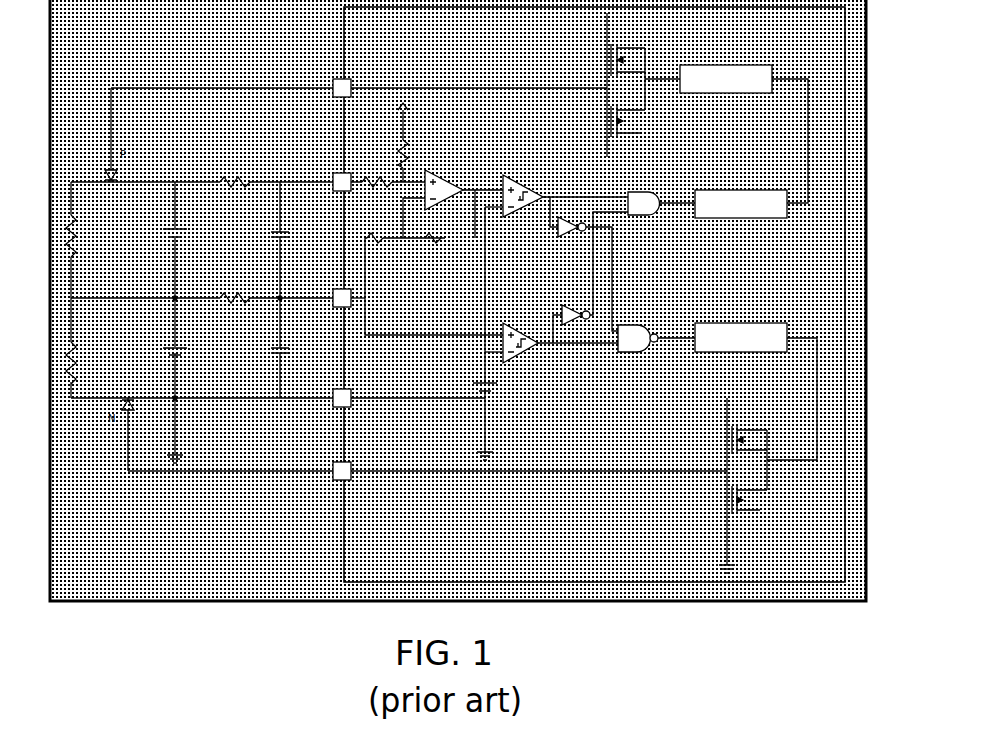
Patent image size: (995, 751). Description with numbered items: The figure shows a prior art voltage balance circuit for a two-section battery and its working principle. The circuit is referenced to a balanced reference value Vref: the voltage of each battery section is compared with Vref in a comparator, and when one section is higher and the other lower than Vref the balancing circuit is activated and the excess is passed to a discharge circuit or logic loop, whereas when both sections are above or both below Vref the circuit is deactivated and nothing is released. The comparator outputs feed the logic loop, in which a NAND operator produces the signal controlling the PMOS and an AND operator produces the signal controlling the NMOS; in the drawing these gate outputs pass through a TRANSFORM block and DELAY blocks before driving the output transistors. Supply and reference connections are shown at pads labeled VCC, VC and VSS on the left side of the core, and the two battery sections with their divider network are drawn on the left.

The supply voltage pad VCC is at (445, 102).
The control voltage pad VC is at (511, 276).
The ground supply pad VSS is at (392, 406).
The balance reference value Vref is at (492, 333).
The transform block TRANSFORM is at (726, 79).
The delay block DELAY is at (741, 271).